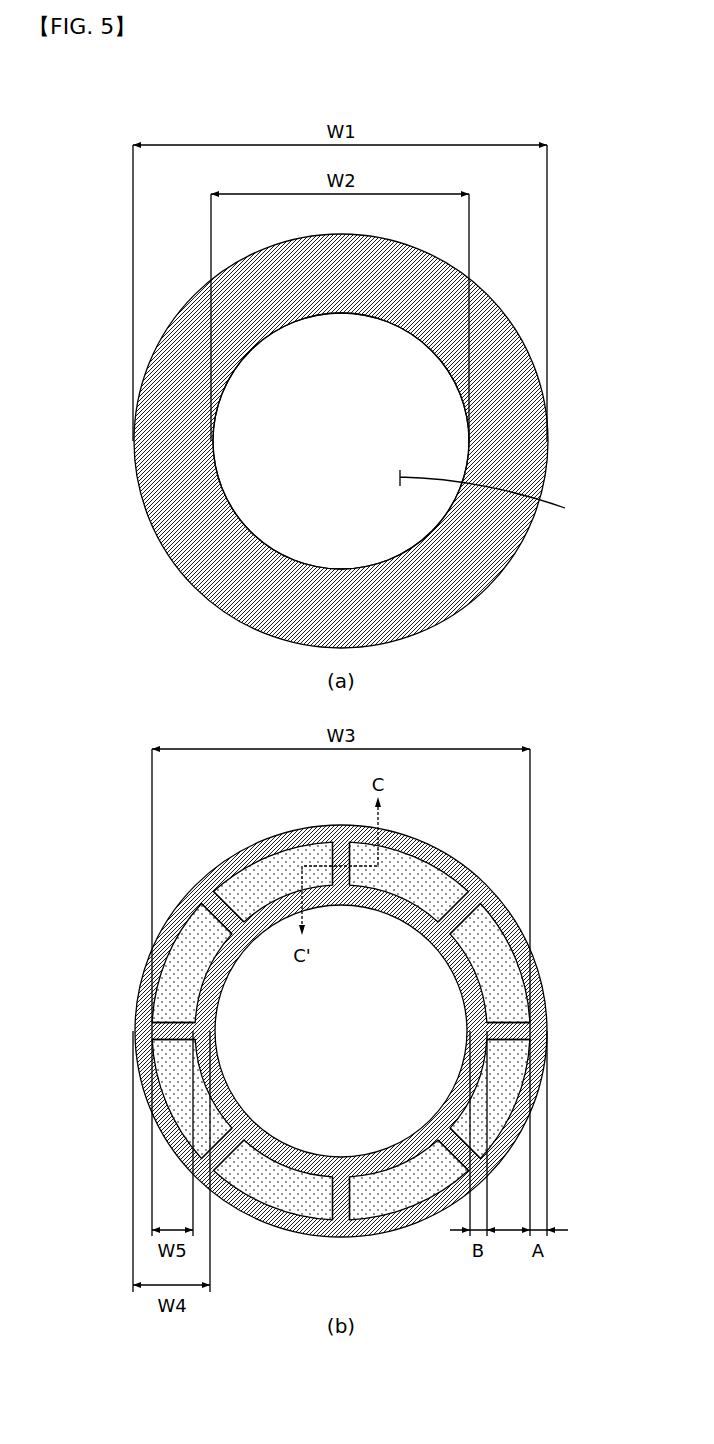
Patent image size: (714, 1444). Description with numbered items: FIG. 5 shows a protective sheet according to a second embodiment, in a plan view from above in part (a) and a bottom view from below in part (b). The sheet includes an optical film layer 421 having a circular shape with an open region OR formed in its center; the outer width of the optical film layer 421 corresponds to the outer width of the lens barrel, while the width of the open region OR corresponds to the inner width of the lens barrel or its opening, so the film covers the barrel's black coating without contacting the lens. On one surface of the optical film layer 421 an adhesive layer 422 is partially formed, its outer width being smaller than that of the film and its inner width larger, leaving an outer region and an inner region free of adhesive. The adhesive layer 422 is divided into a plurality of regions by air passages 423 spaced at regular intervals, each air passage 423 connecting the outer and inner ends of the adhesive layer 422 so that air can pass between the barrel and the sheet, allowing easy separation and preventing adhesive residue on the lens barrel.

The optical film layer 421 is at (546, 447).
The adhesive layer 422 is at (512, 995).
The air passage 423 is at (467, 923).
The open region OR is at (404, 441).